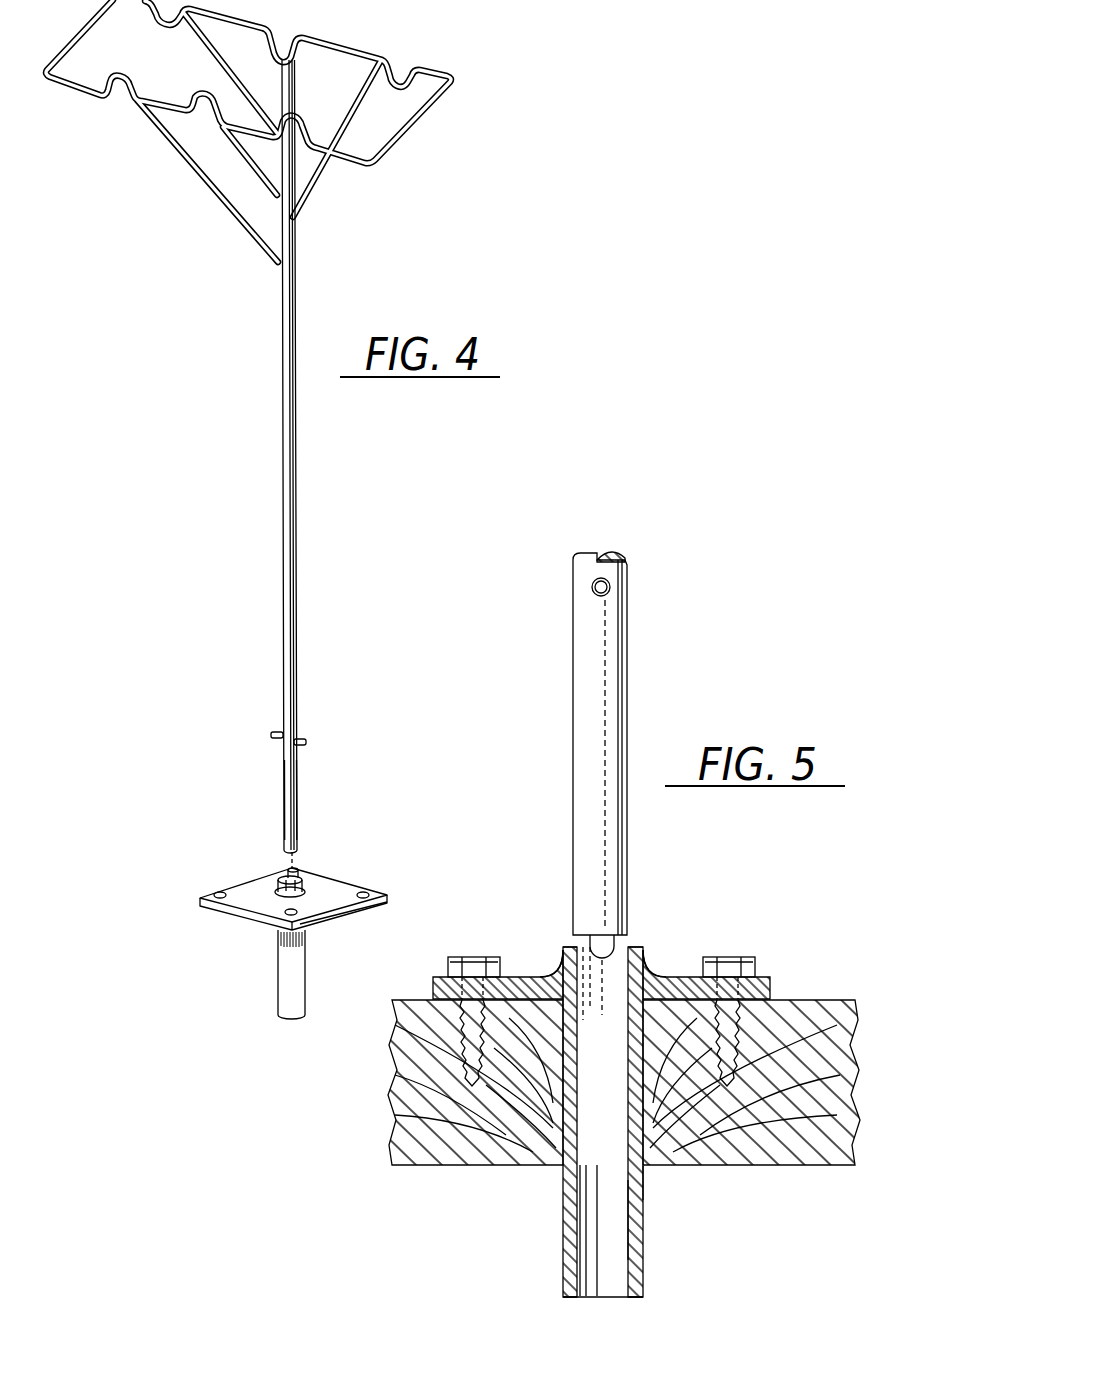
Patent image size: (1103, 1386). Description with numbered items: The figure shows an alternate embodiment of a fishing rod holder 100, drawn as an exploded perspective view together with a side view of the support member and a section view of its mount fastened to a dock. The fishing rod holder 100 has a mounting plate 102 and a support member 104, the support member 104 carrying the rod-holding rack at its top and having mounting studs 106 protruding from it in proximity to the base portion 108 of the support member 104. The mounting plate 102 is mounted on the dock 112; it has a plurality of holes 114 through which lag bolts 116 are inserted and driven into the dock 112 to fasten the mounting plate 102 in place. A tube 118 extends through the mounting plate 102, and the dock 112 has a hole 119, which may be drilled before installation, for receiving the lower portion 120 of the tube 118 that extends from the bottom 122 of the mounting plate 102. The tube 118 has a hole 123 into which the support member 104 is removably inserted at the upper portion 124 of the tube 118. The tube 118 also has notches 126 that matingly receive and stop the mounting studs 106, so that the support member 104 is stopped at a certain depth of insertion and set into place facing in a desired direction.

In FIG. 4, the fishing rod holder 100 is at (470, 77).
In FIG. 4, the mounting plate 102 is at (330, 873).
In FIG. 5, the mounting plate 102 is at (775, 973).
In FIG. 4, the support member 104 is at (295, 557).
In FIG. 5, the support member 104 is at (625, 558).
In FIG. 4, the mounting studs 106 is at (272, 731).
In FIG. 5, the mounting studs 106 is at (612, 588).
In FIG. 4, the base portion 108 is at (297, 793).
In FIG. 5, the base portion 108 is at (625, 682).
In FIG. 5, the dock 112 is at (820, 997).
In FIG. 4, the holes 114 is at (220, 892).
In FIG. 5, the lag bolts 116 is at (480, 957).
In FIG. 4, the tube 118 is at (282, 985).
In FIG. 5, the tube 118 is at (645, 1298).
In FIG. 5, the hole 119 is at (645, 1170).
In FIG. 5, the lower portion 120 is at (645, 1215).
In FIG. 4, the bottom 122 is at (323, 930).
In FIG. 5, the hole 123 is at (573, 950).
In FIG. 5, the upper portion 124 is at (647, 957).
In FIG. 5, the notches 126 is at (608, 932).